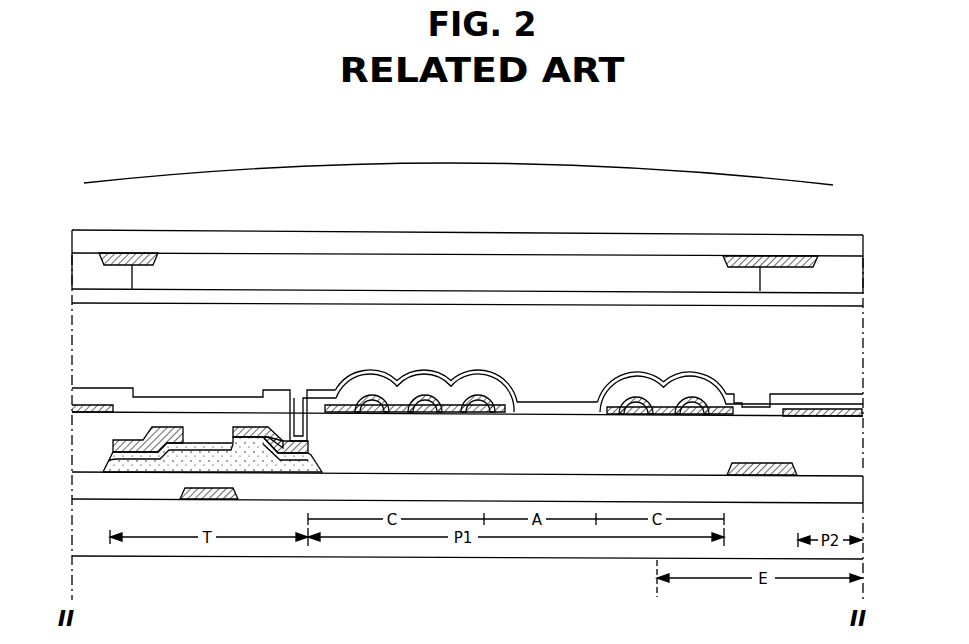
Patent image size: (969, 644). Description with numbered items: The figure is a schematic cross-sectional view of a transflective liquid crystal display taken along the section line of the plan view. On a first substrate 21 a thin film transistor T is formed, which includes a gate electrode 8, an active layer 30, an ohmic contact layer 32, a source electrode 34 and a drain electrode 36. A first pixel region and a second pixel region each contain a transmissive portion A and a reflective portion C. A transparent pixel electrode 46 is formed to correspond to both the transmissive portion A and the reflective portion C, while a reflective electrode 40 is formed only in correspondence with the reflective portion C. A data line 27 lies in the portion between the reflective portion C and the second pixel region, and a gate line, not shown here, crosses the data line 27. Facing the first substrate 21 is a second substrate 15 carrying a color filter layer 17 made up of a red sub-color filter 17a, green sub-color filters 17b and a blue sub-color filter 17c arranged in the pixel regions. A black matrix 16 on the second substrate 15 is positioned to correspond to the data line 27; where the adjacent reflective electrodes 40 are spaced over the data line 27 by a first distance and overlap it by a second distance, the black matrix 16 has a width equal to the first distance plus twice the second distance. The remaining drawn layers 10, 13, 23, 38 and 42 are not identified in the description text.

The gate electrode 8 is at (225, 492).
The lower substrate 10 is at (848, 492).
The upper substrate lower layer 13 is at (850, 301).
The second substrate 15 is at (585, 240).
The black matrix 16 is at (762, 256).
The color filter layer 17 is at (436, 183).
The red sub-color filter 17a is at (90, 265).
The green sub-color filter 17b is at (445, 265).
The blue sub-color filter 17c is at (835, 270).
The first substrate 21 is at (72, 533).
The liquid crystal layer 23 is at (850, 345).
The data line 27 is at (764, 462).
The active layer 30 is at (312, 462).
The ohmic contact layer 32 is at (270, 440).
The source electrode 34 is at (160, 438).
The drain electrode 36 is at (246, 427).
The passivation layer 38 is at (838, 446).
The reflective electrode 40 is at (636, 392).
The overcoat layer 42 is at (422, 382).
The transparent pixel electrode 46 is at (484, 378).